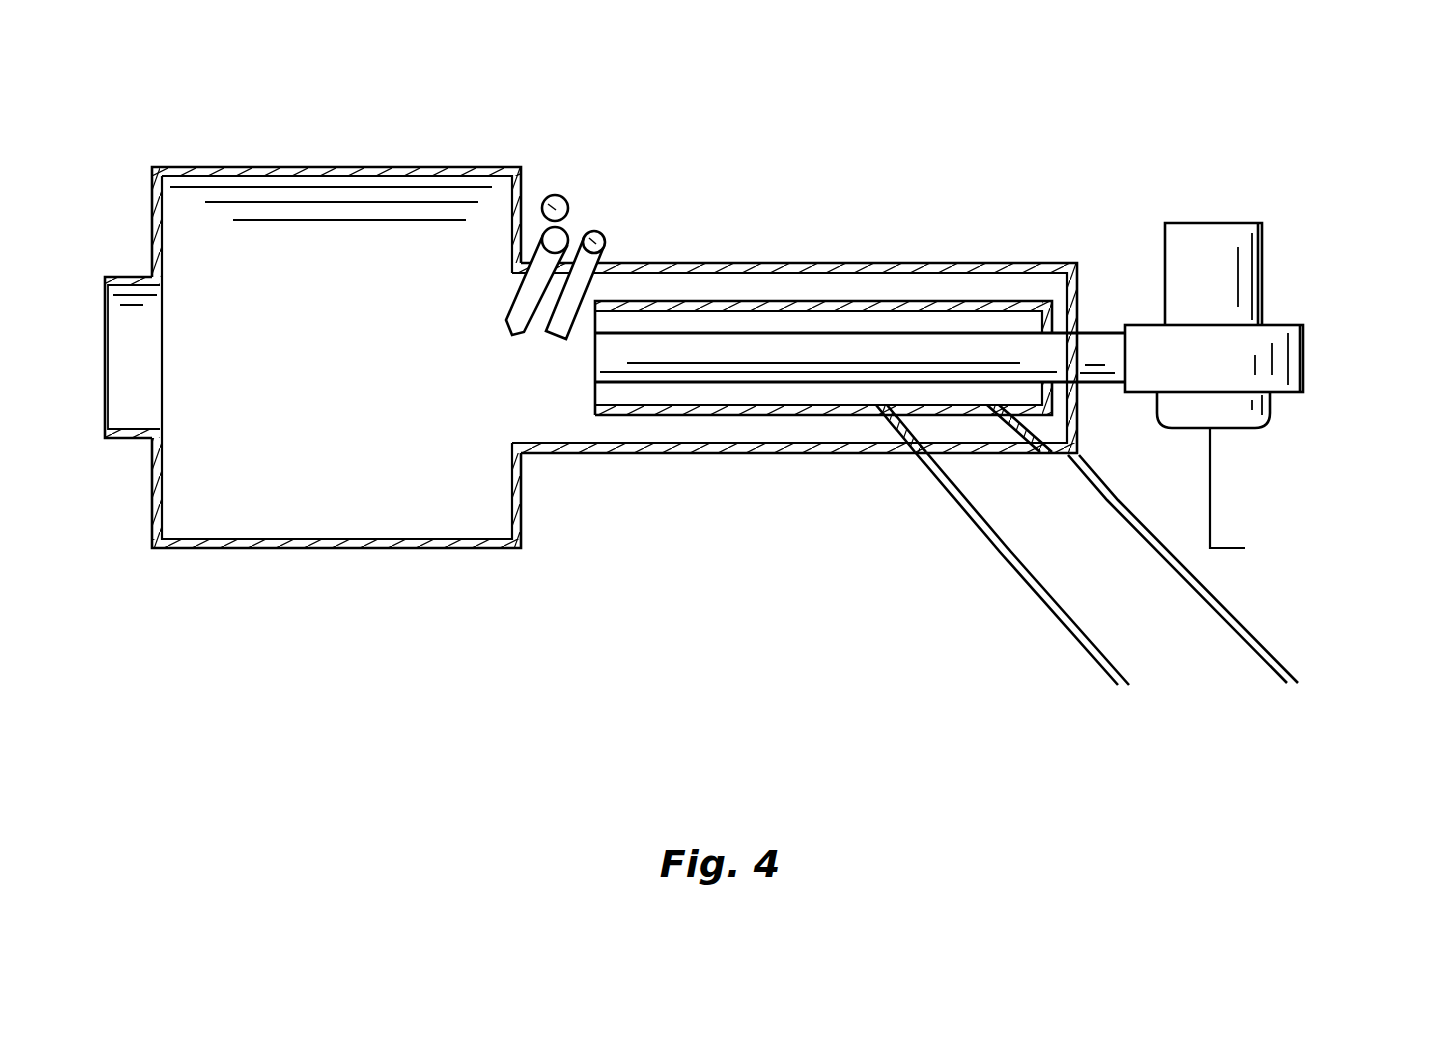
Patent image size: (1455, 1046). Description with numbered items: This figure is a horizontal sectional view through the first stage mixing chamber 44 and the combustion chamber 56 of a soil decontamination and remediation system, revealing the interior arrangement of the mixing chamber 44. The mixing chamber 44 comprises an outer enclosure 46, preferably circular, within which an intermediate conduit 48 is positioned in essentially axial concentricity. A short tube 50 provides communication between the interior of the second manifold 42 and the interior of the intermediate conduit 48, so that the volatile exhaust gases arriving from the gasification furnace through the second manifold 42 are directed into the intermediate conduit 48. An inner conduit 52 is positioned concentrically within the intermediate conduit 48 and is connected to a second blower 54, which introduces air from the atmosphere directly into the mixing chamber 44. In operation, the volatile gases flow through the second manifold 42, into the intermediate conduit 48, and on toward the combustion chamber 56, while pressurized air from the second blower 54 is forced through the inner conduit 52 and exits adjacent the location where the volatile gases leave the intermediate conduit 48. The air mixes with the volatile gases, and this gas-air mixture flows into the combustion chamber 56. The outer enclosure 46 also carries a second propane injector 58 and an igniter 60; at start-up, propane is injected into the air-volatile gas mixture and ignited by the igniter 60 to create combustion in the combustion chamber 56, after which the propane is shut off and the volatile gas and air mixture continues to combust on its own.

The second manifold 42 is at (1035, 597).
The mixing chamber 44 is at (805, 214).
The outer enclosure 46 is at (960, 263).
The intermediate conduit 48 is at (1023, 305).
The short tube 50 is at (943, 452).
The inner conduit 52 is at (638, 350).
The second blower 54 is at (1280, 365).
The combustion chamber 56 is at (225, 548).
The second propane injector 58 is at (597, 231).
The igniter 60 is at (555, 195).